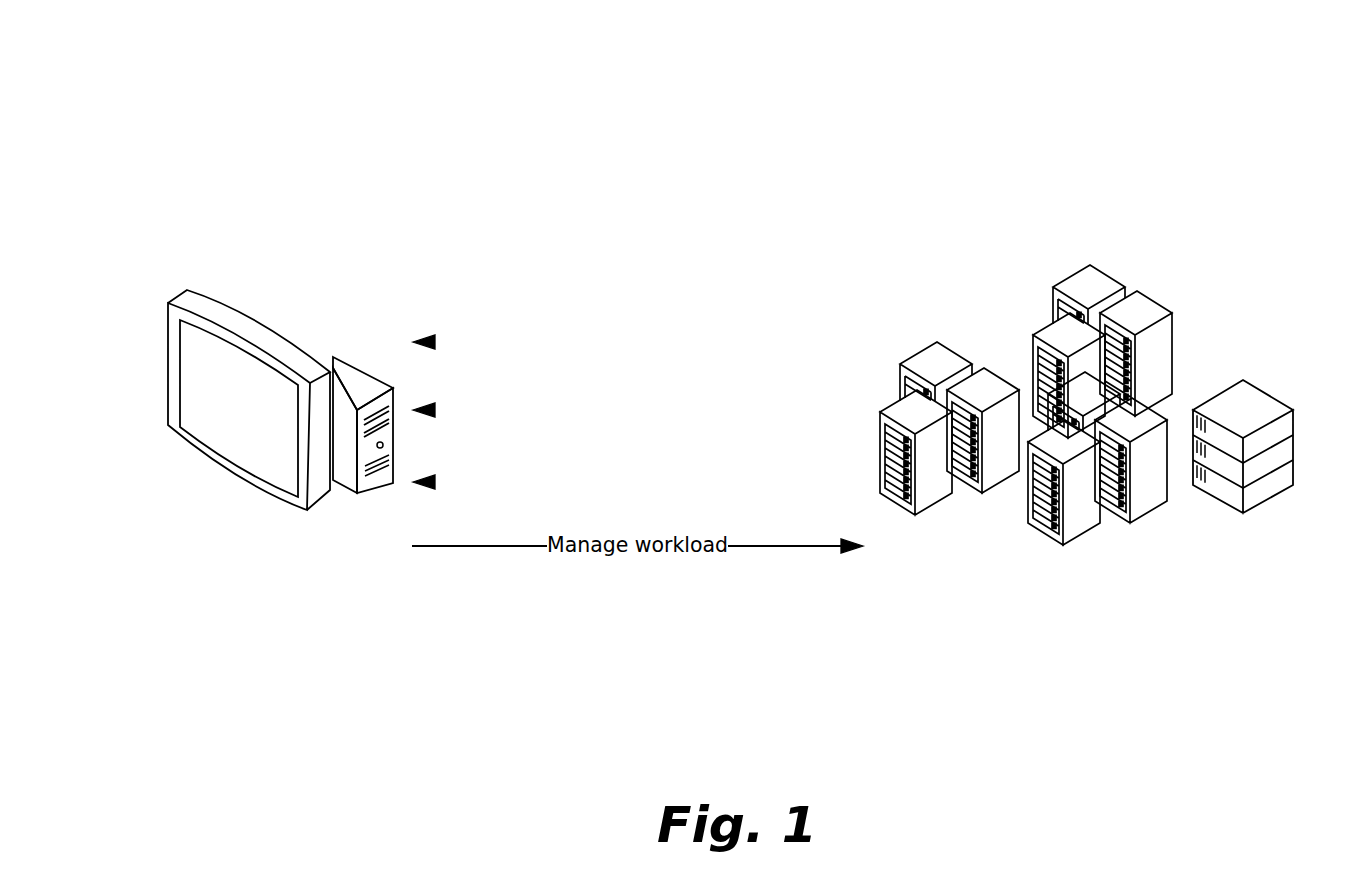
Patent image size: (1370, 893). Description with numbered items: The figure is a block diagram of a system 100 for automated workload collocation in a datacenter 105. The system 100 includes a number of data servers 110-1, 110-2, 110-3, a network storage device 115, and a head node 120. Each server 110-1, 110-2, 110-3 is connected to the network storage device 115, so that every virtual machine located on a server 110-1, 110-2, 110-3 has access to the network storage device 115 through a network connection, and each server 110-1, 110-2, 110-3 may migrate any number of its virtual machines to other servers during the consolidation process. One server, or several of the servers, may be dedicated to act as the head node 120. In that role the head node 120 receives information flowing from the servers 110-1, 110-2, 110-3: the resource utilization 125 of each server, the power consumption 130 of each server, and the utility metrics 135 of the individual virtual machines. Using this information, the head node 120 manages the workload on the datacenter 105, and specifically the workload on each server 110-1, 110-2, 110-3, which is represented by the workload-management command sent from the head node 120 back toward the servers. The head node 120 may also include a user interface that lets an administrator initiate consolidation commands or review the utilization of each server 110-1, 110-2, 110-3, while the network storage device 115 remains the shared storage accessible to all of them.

The system 100 is at (185, 110).
The datacenter 105 is at (983, 205).
The data server 110-1 is at (915, 487).
The data server 110-2 is at (1060, 527).
The data server 110-3 is at (1130, 507).
The network storage device 115 is at (1260, 490).
The head node 120 is at (358, 388).
The resource utilization 125 is at (863, 342).
The power consumption 130 is at (863, 410).
The utility metrics 135 is at (867, 482).